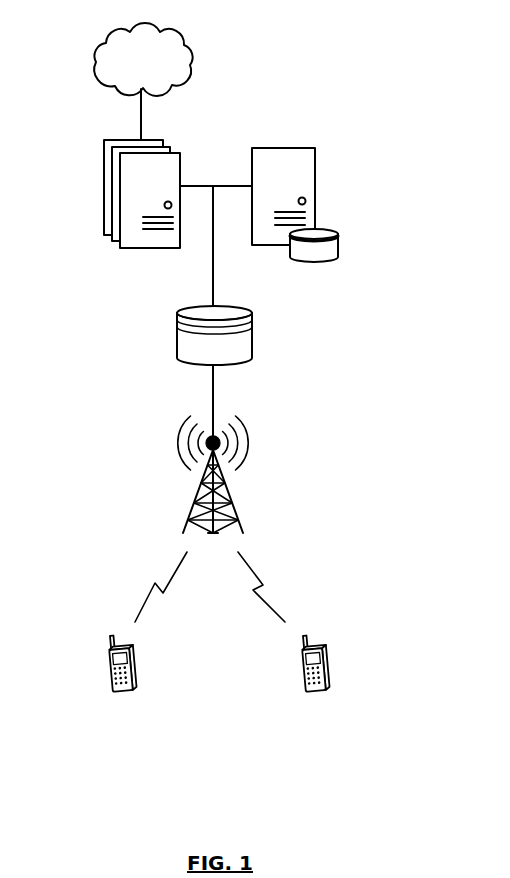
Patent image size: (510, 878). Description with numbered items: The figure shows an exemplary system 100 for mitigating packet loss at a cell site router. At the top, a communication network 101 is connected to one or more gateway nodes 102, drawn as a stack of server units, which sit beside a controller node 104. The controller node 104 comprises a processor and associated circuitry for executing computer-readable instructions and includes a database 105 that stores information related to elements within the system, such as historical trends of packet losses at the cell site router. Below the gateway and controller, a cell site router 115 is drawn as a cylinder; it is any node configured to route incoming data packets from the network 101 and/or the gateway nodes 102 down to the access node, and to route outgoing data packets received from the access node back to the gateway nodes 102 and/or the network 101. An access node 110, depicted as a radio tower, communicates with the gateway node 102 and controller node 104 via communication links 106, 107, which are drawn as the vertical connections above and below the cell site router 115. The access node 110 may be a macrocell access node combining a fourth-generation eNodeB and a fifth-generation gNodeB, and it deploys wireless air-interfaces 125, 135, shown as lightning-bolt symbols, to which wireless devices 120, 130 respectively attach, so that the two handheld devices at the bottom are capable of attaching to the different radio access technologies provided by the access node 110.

The system 100 is at (329, 40).
The communication network 101 is at (143, 59).
The gateway node 102 is at (105, 141).
The controller node 104 is at (313, 148).
The database 105 is at (338, 228).
The communication link 106 is at (214, 406).
The communication link 107 is at (212, 288).
The access node 110 is at (200, 495).
The cell site router 115 is at (253, 334).
The wireless device 120 is at (105, 679).
The wireless air-interface 125 is at (156, 586).
The wireless device 130 is at (299, 679).
The wireless air-interface 135 is at (270, 581).